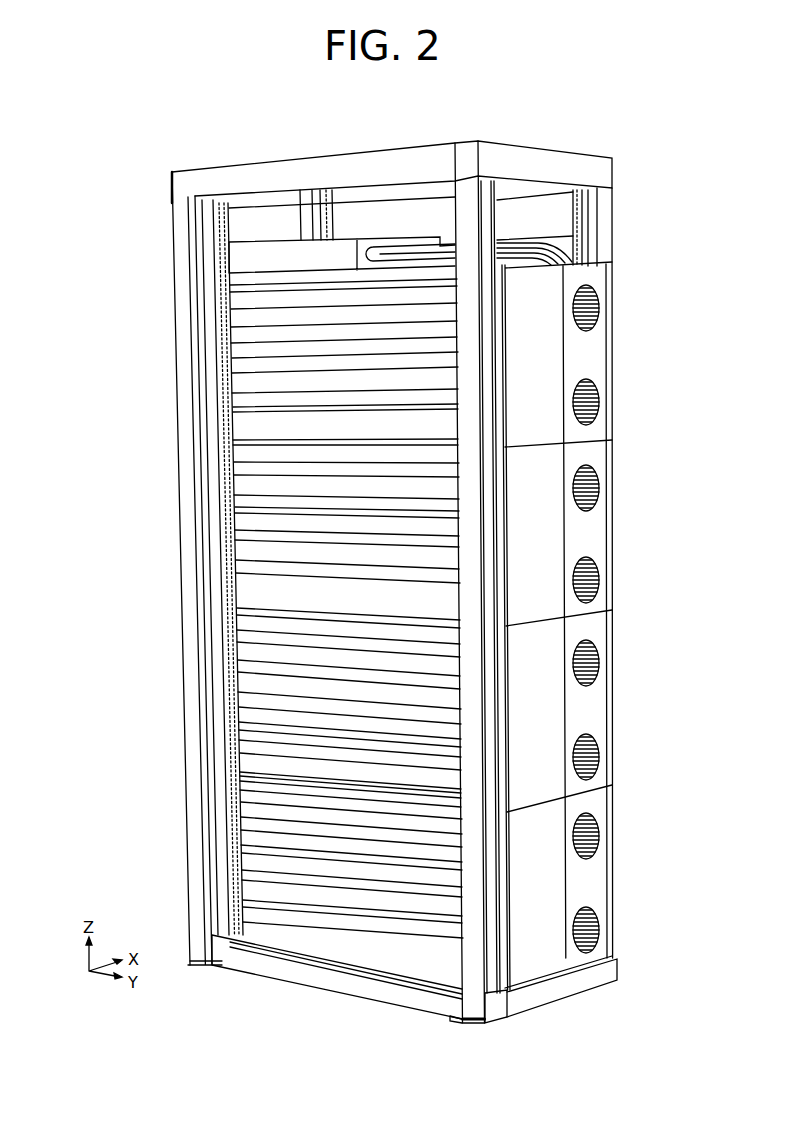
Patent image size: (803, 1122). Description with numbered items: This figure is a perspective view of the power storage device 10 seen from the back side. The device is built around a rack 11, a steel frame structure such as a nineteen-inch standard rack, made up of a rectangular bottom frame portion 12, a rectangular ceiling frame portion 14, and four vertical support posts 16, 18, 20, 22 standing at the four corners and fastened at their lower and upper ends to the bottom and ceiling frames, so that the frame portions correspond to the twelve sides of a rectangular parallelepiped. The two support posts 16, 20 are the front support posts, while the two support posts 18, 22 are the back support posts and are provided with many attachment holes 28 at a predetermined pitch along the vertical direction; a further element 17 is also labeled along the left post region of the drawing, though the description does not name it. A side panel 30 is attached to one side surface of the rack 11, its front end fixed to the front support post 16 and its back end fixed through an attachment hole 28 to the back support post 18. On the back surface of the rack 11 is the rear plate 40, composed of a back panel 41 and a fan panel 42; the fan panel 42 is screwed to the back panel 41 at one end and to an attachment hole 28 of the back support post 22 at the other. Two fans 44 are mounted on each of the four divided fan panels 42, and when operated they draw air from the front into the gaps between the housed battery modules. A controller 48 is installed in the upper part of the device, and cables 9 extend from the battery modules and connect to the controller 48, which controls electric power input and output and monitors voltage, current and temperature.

The cable 9 is at (540, 243).
The power storage device 10 is at (134, 167).
The rack 11 is at (183, 172).
The bottom frame portion 12 is at (330, 990).
The ceiling frame portion 14 is at (366, 150).
The support post 16 is at (173, 252).
The mounting rail 17 is at (208, 303).
The support post 18 is at (466, 165).
The support post 20 is at (291, 205).
The support post 22 is at (612, 213).
The attachment hole 28 is at (588, 245).
The side panel 30 is at (252, 425).
The rear plate 40 is at (667, 332).
The back panel 41 is at (552, 357).
The fan panel 42 is at (594, 368).
The fan 44 is at (594, 306).
The controller 48 is at (255, 238).